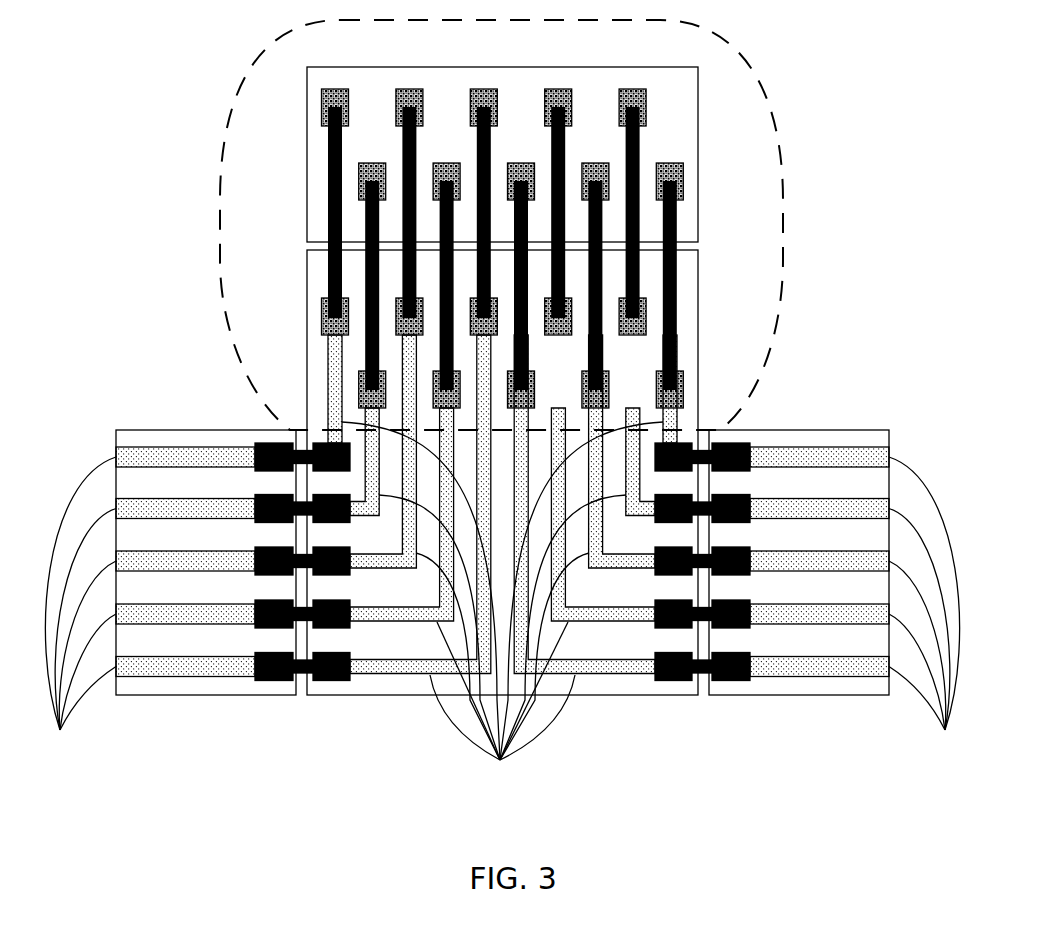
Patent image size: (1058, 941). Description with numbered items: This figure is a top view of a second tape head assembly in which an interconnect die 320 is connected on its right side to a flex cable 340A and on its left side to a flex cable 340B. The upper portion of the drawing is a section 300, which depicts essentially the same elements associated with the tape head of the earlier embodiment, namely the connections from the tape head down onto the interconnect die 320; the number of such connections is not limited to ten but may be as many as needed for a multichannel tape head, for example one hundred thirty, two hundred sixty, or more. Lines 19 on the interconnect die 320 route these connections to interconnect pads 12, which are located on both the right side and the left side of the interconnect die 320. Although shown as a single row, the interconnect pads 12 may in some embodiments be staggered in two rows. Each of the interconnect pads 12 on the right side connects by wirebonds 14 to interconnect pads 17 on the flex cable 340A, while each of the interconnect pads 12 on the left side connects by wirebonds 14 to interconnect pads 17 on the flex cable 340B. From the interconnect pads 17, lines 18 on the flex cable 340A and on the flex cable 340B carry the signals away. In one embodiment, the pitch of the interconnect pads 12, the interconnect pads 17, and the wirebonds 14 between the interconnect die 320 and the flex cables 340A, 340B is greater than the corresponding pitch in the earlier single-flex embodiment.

The section 300 is at (772, 80).
The interconnect die 320 is at (348, 695).
The flex cable 340A is at (858, 695).
The flex cable 340B is at (155, 695).
The interconnect pads 12 is at (334, 472).
The wirebonds 14 is at (300, 466).
The interconnect pads 17 is at (253, 464).
The lines 18 is at (60, 730).
The lines 19 is at (502, 606).